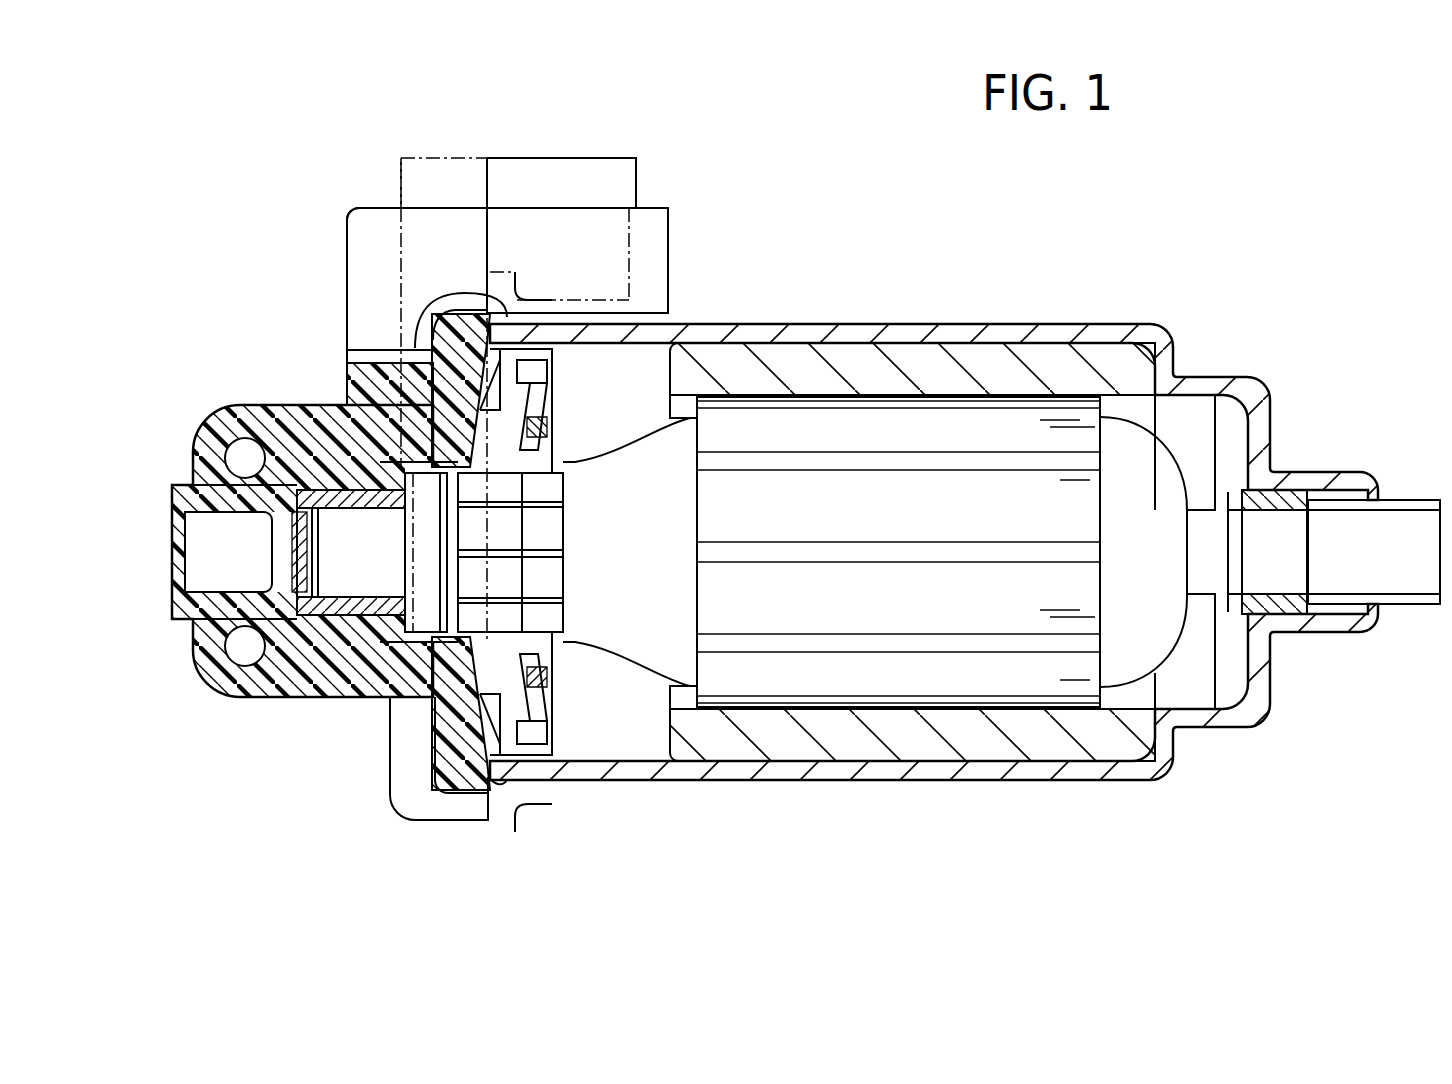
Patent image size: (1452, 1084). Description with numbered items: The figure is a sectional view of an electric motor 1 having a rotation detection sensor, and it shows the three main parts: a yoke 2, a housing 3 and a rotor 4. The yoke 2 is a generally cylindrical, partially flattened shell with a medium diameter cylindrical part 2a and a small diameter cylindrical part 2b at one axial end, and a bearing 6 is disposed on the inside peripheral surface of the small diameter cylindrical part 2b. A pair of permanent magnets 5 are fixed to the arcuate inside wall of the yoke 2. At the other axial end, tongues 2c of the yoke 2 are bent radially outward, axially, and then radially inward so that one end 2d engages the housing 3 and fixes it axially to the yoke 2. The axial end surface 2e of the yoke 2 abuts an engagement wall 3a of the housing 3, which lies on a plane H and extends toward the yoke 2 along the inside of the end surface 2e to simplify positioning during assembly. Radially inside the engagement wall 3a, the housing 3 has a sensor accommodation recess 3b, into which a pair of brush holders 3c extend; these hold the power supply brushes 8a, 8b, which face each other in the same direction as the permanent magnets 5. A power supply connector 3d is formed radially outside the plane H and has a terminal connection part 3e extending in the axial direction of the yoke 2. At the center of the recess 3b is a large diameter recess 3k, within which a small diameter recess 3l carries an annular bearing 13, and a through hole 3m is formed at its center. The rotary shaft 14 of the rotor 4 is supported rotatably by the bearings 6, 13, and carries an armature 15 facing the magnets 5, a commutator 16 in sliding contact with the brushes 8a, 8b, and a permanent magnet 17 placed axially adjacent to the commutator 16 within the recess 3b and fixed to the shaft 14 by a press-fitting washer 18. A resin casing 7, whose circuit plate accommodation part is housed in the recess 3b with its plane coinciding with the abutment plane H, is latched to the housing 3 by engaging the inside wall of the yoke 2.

The electric motor 1 is at (812, 277).
The yoke 2 is at (900, 332).
The medium diameter cylindrical part 2a is at (1205, 382).
The small diameter cylindrical part 2b is at (1322, 480).
The tongue 2c is at (470, 302).
The one end of the yoke 2d is at (418, 333).
The axial end surface 2e is at (490, 325).
The housing 3 is at (265, 410).
The engagement wall 3a is at (555, 357).
The sensor accommodation recess 3b is at (428, 692).
The brush holder 3c is at (547, 405).
The power supply connector 3d is at (368, 212).
The terminal connection part 3e is at (668, 245).
The large diameter recess 3k is at (405, 445).
The small diameter recess 3l is at (333, 482).
The through hole 3m is at (268, 540).
The rotor 4 is at (638, 583).
The permanent magnet 5 is at (1045, 357).
The bearing 6 is at (1282, 605).
The casing 7 is at (435, 158).
The power supply brush 8a is at (513, 462).
The power supply brush 8b is at (513, 646).
The annular bearing 13 is at (376, 597).
The rotary shaft 14 is at (208, 472).
The armature 15 is at (832, 690).
The commutator 16 is at (515, 528).
The permanent magnet 17 is at (403, 650).
The press-fitting washer 18 is at (405, 527).
The plane H is at (512, 272).